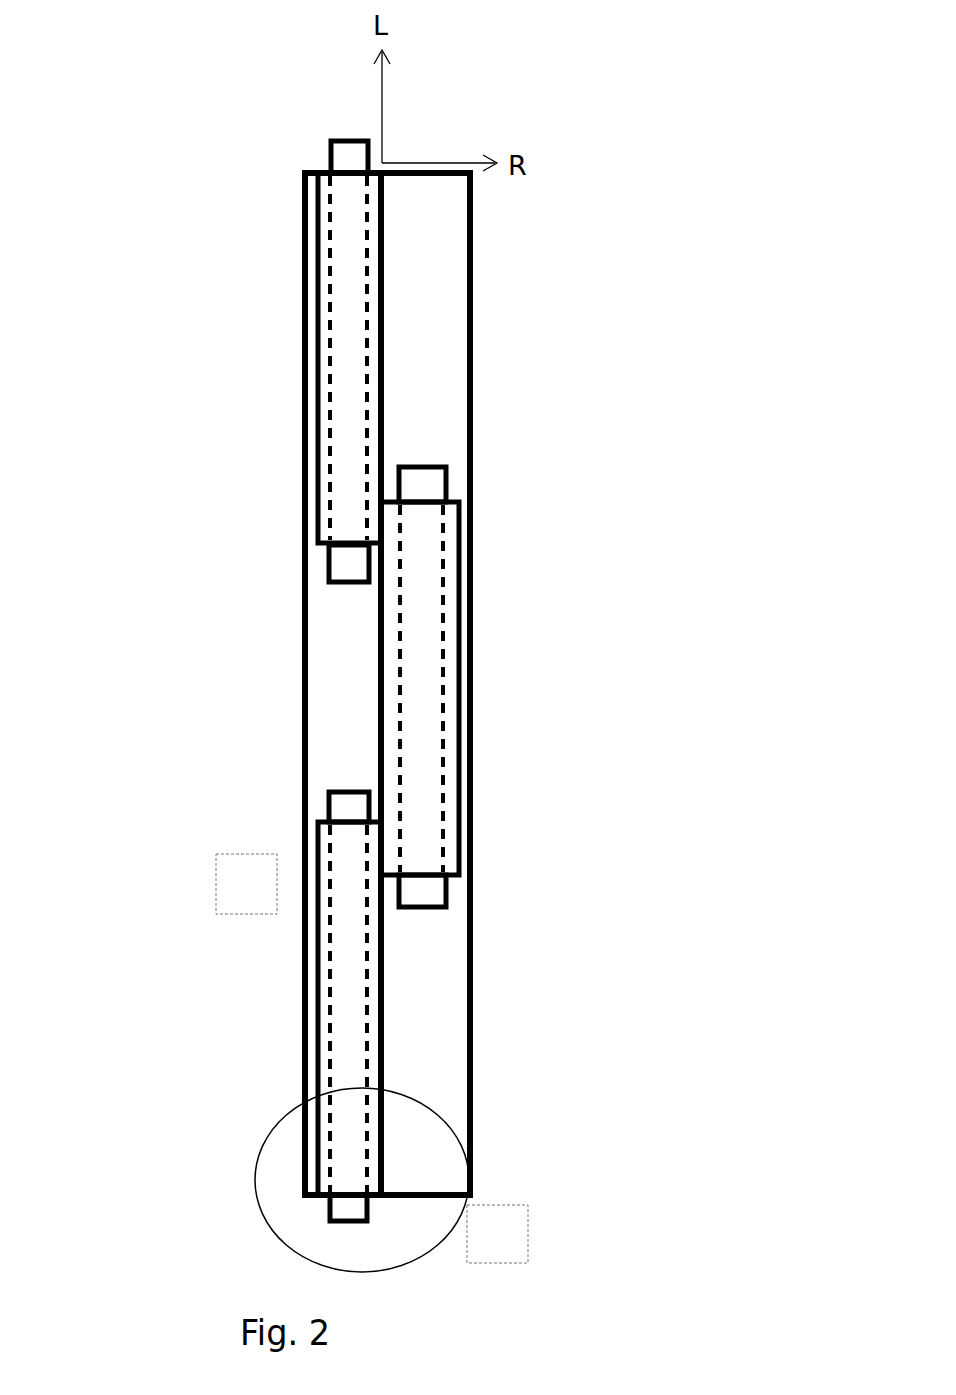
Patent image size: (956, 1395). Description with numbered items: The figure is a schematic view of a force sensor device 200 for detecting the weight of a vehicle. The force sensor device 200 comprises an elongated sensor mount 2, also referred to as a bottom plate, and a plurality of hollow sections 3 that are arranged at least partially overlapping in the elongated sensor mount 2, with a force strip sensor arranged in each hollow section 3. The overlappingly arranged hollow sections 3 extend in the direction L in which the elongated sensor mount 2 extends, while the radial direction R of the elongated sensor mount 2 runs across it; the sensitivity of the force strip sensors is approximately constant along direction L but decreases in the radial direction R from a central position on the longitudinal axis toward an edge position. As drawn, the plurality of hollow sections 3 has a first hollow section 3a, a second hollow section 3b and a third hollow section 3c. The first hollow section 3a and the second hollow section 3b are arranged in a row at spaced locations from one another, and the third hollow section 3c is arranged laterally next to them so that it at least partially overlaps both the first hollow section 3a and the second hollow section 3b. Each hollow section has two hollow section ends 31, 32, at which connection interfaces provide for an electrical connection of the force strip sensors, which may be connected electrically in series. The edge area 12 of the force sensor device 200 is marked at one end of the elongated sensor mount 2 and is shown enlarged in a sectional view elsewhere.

The force sensor device 200 is at (116, 236).
The elongated sensor mount 2 is at (440, 318).
The hollow sections 3 is at (348, 868).
The first hollow section 3a is at (350, 933).
The second hollow section 3b is at (350, 318).
The third hollow section 3c is at (425, 708).
The hollow section end 31 is at (430, 888).
The hollow section end 32 is at (415, 470).
The edge area 12 is at (246, 1162).